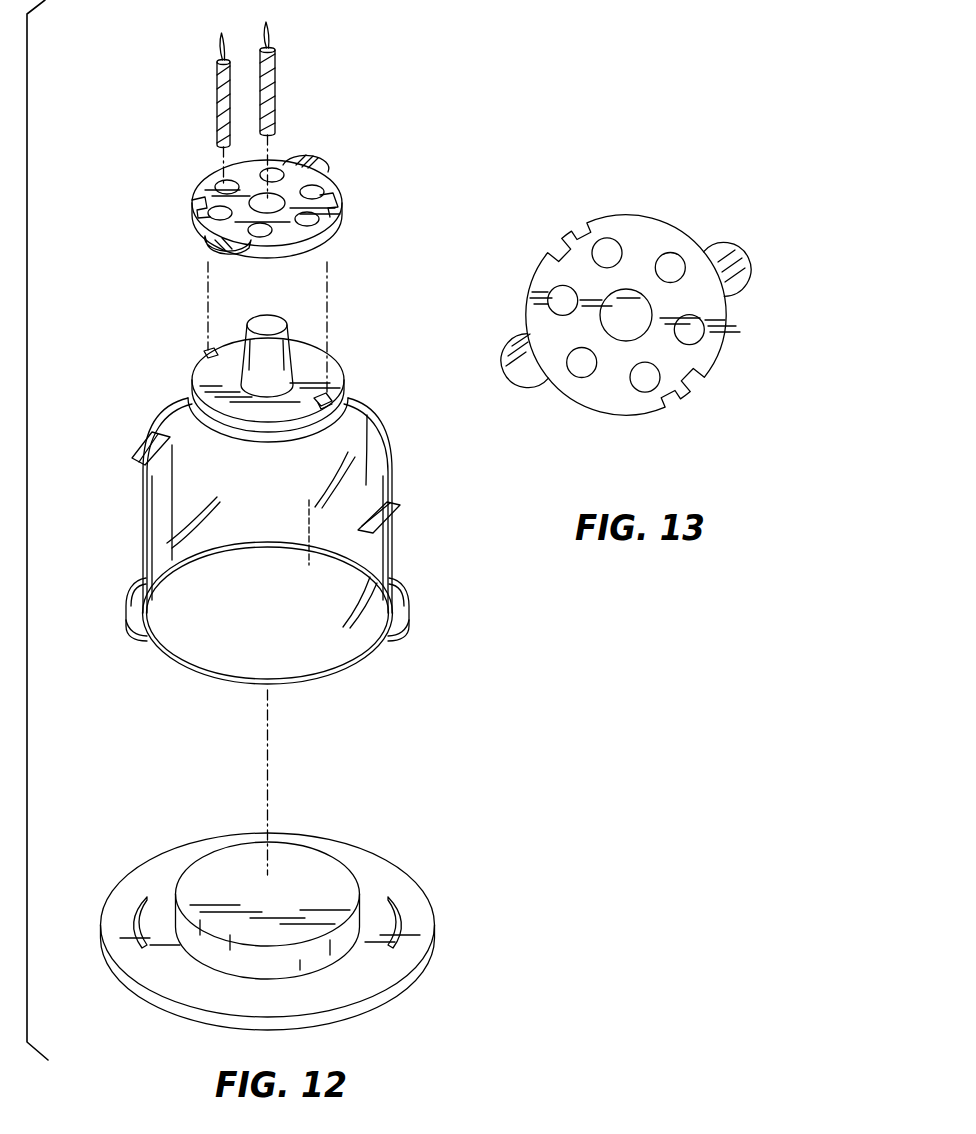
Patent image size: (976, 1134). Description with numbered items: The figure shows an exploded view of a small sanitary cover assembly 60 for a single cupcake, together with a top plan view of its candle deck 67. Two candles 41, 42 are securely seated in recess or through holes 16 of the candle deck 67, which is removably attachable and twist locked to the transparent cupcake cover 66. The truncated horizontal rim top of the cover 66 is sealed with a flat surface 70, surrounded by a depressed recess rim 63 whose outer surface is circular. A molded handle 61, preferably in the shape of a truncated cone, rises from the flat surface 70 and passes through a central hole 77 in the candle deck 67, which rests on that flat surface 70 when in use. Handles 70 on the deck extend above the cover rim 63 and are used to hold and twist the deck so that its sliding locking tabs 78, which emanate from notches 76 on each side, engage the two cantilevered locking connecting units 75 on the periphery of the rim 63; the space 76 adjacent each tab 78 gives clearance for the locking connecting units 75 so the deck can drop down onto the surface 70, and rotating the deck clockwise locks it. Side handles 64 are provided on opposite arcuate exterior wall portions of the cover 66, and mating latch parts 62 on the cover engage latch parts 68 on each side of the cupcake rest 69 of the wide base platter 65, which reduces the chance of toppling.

In FIG. 12, the through holes 16 is at (218, 206).
In FIG. 13, the through holes 16 is at (612, 250).
In FIG. 12, the candle 41 is at (215, 100).
In FIG. 12, the candle 42 is at (276, 90).
In FIG. 12, the sanitary cover assembly 60 is at (447, 160).
In FIG. 12, the handle 61 is at (283, 323).
In FIG. 12, the mating latch parts 62 is at (128, 615).
In FIG. 12, the recess rim 63 is at (343, 382).
In FIG. 12, the side handles 64 is at (135, 455).
In FIG. 12, the base platter 65 is at (266, 907).
In FIG. 12, the cupcake cover 66 is at (259, 475).
In FIG. 12, the candle deck 67 is at (266, 179).
In FIG. 13, the candle deck 67 is at (618, 296).
In FIG. 12, the latch parts 68 is at (127, 912).
In FIG. 12, the cupcake rest 69 is at (288, 863).
In FIG. 12, the flat surface 70 is at (320, 160).
In FIG. 13, the flat surface 70 is at (722, 253).
In FIG. 12, the locking connecting units 75 is at (207, 352).
In FIG. 13, the notches 76 is at (558, 258).
In FIG. 12, the central hole 77 is at (270, 195).
In FIG. 13, the central hole 77 is at (630, 312).
In FIG. 13, the sliding locking tabs 78 is at (575, 229).